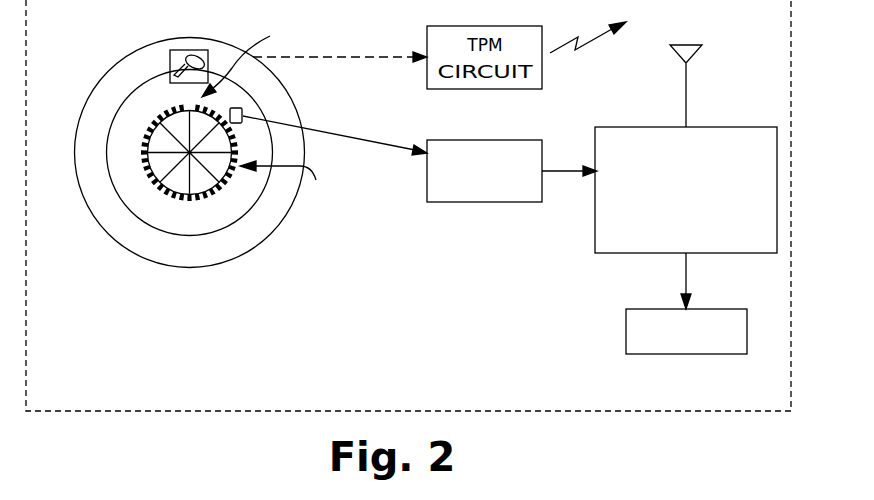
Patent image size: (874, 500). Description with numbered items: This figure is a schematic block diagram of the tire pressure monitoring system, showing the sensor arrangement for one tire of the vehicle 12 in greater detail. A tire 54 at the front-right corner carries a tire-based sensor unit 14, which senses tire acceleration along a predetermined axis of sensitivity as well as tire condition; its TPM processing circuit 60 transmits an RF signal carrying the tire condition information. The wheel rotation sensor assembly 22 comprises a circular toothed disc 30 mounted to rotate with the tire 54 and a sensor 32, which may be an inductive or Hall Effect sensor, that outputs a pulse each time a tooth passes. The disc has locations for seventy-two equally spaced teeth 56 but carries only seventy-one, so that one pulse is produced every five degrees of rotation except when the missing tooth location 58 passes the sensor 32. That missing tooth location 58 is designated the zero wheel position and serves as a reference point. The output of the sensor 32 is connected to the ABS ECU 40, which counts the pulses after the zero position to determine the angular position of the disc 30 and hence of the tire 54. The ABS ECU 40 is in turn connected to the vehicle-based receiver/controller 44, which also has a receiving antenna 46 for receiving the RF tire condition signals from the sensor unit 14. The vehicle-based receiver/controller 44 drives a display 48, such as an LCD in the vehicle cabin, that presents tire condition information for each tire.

The vehicle 12 is at (145, 412).
The tire-based sensor unit 14 is at (196, 60).
The wheel rotation sensor assembly 22 is at (125, 189).
The toothed disc 30 is at (210, 195).
The sensor 32 is at (243, 112).
The ABS electronic control unit 40 is at (456, 139).
The vehicle-based receiver/controller 44 is at (717, 127).
The receiving antenna 46 is at (698, 53).
The display 48 is at (716, 354).
The tire 54 is at (129, 66).
The teeth 56 is at (291, 181).
The missing tooth location 58 is at (249, 62).
The TPM processing circuit 60 is at (542, 74).